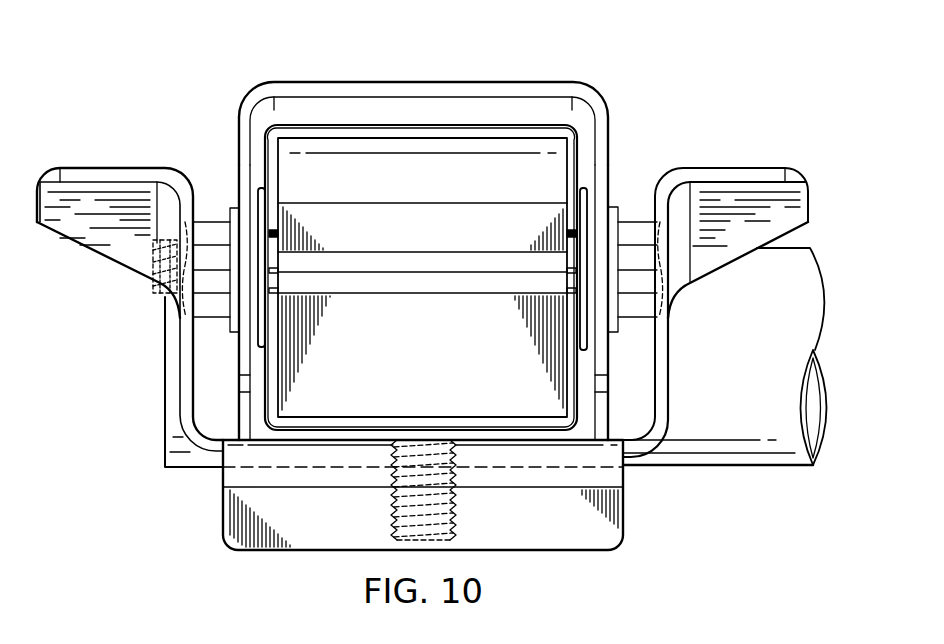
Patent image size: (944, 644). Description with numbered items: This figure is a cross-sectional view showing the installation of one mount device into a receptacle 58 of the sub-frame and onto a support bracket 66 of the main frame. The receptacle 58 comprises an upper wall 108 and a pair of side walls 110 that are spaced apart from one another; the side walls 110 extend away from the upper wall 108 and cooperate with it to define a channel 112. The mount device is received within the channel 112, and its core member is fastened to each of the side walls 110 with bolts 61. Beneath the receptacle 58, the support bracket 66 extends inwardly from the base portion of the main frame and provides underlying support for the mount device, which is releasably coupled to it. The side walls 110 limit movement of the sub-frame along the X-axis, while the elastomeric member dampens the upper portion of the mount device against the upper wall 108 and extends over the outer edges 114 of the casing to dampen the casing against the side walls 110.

The receptacle 58 is at (478, 71).
The bolt 61 is at (633, 219).
The support bracket 66 is at (300, 538).
The upper wall 108 is at (347, 82).
The side walls 110 is at (238, 127).
The channel 112 is at (588, 392).
The outer edges 114 is at (275, 357).